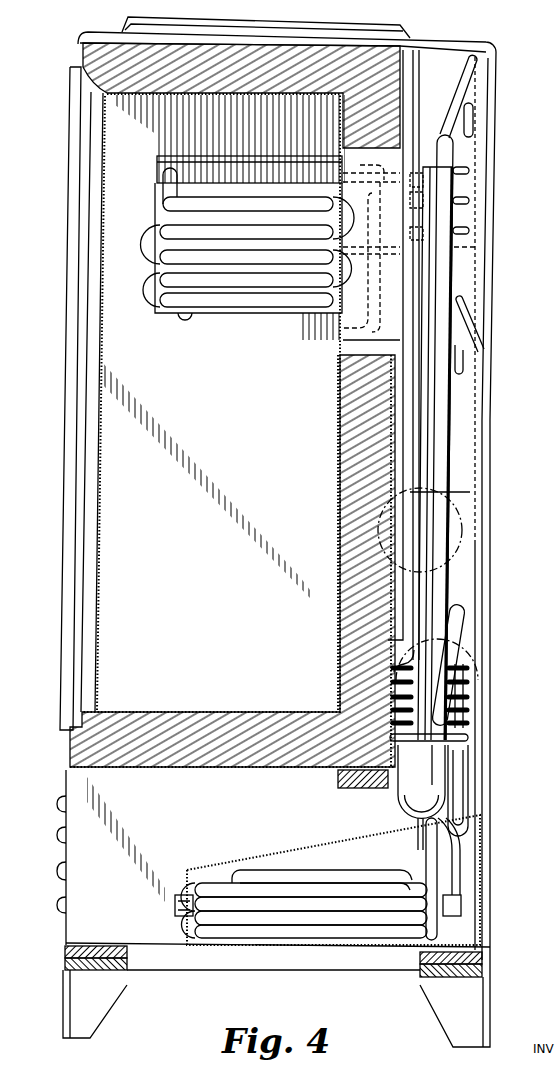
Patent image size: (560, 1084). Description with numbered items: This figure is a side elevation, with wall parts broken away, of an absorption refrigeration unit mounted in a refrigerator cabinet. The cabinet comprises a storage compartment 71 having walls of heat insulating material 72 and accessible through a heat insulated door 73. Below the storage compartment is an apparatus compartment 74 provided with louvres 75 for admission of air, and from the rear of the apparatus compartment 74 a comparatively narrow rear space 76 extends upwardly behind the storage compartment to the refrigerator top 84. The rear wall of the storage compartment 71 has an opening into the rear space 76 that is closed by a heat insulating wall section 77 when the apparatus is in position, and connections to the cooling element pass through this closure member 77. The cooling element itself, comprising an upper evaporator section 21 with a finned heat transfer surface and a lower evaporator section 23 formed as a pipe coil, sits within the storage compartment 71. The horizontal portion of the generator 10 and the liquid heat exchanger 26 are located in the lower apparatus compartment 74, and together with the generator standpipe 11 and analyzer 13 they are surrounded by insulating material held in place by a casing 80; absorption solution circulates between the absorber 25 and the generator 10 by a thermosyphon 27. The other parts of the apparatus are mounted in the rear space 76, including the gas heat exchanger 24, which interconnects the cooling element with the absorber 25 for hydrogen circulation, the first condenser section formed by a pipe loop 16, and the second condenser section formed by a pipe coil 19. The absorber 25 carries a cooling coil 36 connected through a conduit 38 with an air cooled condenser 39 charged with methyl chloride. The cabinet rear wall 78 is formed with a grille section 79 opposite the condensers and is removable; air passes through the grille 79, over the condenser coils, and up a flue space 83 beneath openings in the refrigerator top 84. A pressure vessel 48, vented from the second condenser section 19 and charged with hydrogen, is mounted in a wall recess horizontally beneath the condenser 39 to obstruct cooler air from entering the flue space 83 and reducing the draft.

The generator 10 is at (218, 872).
The generator standpipe 11 is at (413, 822).
The analyzer 13 is at (455, 845).
The pipe loop 16 is at (462, 203).
The pipe coil 19 is at (477, 118).
The upper evaporator section 21 is at (160, 160).
The lower evaporator section 23 is at (165, 243).
The gas heat exchanger 24 is at (453, 273).
The absorber 25 is at (405, 790).
The liquid heat exchanger 26 is at (195, 912).
The thermosyphon 27 is at (425, 847).
The cooling coil 36 is at (470, 740).
The conduit 38 is at (470, 767).
The air cooled condenser 39 is at (458, 365).
The pressure vessel 48 is at (408, 565).
The storage compartment 71 is at (145, 527).
The heat insulating material 72 is at (355, 500).
The heat insulated door 73 is at (62, 655).
The apparatus compartment 74 is at (90, 880).
The louvres 75 is at (60, 812).
The rear space 76 is at (483, 657).
The heat insulating wall section 77 is at (350, 340).
The rear wall 78 is at (490, 815).
The grille section 79 is at (491, 430).
The casing 80 is at (292, 858).
The flue space 83 is at (440, 70).
The refrigerator top 84 is at (82, 40).